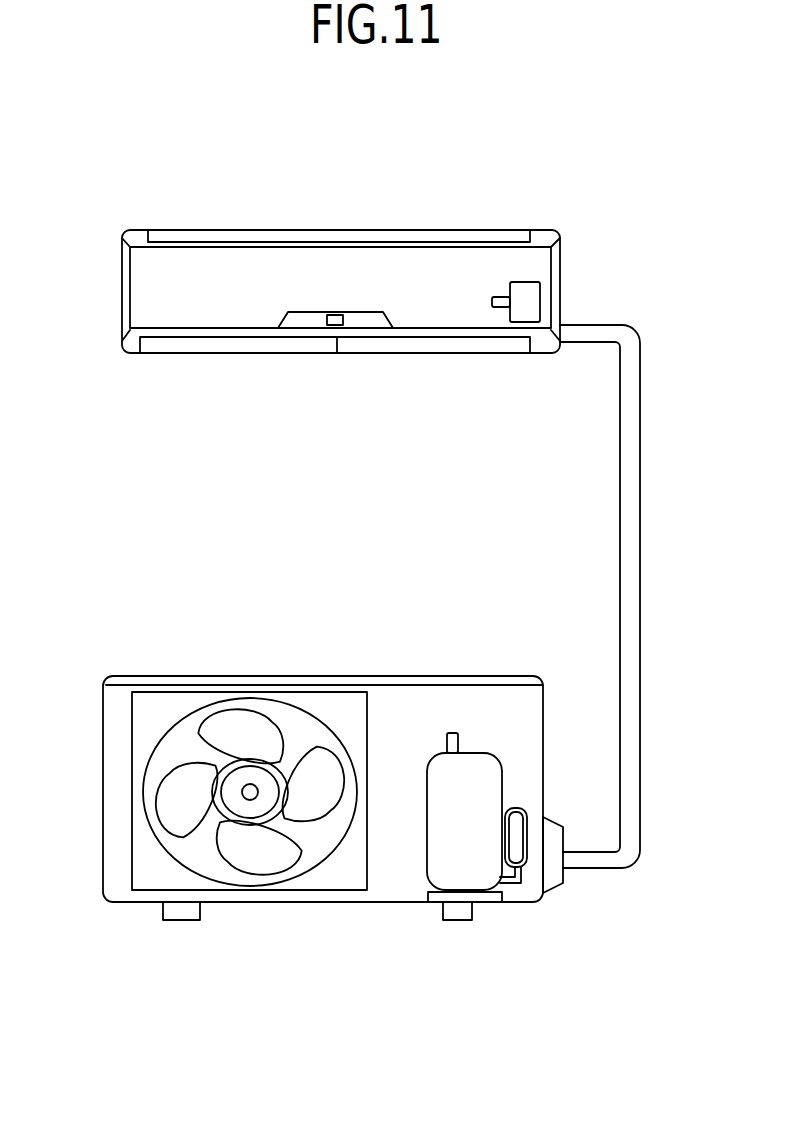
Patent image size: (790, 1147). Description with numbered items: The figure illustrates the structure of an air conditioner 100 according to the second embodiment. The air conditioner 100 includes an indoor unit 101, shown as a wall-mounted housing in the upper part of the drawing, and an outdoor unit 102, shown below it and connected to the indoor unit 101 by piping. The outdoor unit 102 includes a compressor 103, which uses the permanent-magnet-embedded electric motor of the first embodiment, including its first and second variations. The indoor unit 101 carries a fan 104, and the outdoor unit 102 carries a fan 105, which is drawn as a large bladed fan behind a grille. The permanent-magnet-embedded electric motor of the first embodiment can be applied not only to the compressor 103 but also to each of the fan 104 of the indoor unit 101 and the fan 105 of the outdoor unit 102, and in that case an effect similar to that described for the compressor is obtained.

The air conditioner 100 is at (554, 178).
The indoor unit 101 is at (210, 355).
The outdoor unit 102 is at (203, 677).
The compressor 103 is at (440, 818).
The fan 104 is at (541, 302).
The fan 105 is at (233, 793).